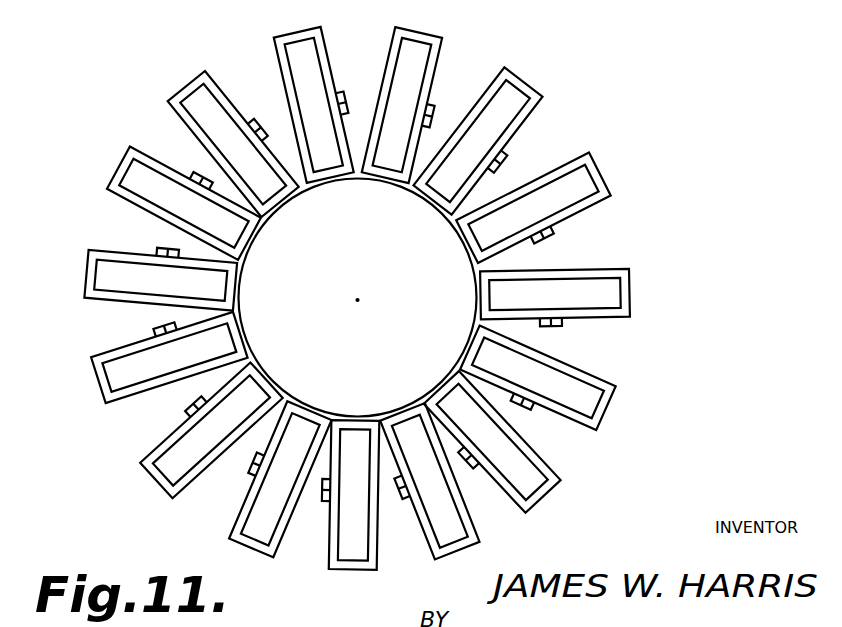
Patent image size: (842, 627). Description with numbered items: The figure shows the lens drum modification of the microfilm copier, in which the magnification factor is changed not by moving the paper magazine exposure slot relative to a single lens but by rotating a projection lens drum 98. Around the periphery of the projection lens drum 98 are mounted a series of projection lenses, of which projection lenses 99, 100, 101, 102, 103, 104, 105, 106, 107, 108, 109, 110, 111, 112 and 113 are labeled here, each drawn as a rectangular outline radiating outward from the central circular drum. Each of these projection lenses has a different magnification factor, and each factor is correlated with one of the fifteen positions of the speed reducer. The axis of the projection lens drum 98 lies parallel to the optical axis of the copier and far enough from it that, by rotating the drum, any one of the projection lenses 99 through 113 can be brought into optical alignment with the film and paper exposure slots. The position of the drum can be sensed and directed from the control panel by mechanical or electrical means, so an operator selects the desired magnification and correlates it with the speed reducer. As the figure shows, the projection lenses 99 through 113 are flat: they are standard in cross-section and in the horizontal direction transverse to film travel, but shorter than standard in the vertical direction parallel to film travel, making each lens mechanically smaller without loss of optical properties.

The projection lens drum 98 is at (743, 297).
The projection lens 99 is at (416, 91).
The projection lens 100 is at (496, 135).
The projection lens 101 is at (559, 208).
The projection lens 102 is at (581, 298).
The projection lens 103 is at (565, 378).
The projection lens 104 is at (512, 443).
The projection lens 105 is at (429, 502).
The projection lens 106 is at (350, 518).
The projection lens 107 is at (253, 479).
The projection lens 108 is at (185, 440).
The projection lens 109 is at (143, 359).
The projection lens 110 is at (135, 279).
The projection lens 111 is at (163, 203).
The projection lens 112 is at (222, 136).
The projection lens 113 is at (314, 91).